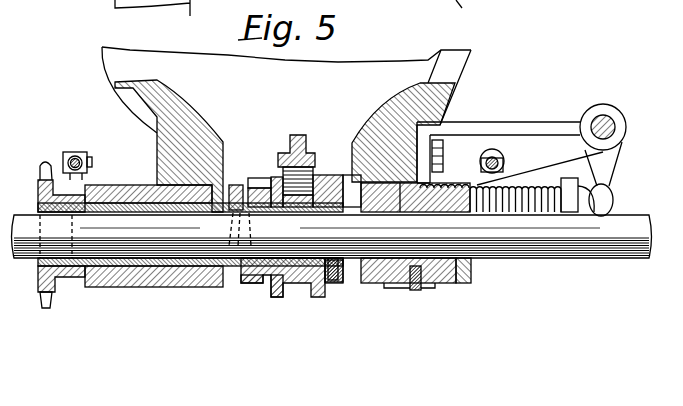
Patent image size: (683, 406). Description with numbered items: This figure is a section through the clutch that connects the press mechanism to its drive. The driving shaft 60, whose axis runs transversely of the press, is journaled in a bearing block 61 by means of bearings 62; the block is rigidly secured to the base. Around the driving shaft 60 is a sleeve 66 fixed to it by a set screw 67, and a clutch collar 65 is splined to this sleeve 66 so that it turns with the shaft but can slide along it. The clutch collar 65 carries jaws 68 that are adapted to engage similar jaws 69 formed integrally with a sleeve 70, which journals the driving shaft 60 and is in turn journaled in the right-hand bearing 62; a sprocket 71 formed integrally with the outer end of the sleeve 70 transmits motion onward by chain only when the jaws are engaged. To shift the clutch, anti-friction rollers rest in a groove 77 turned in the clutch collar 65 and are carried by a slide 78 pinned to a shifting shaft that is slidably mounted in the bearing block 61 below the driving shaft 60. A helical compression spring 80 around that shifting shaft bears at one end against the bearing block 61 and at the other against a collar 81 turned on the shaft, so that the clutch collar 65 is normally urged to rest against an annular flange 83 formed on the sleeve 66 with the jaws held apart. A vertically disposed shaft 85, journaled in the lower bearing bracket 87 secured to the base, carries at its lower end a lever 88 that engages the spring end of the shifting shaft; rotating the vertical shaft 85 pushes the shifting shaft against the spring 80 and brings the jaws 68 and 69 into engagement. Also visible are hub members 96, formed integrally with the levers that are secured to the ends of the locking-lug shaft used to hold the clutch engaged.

The driving shaft 60 is at (618, 232).
The bearing block 61 is at (462, 284).
The bearings 62 is at (196, 287).
The clutch collar 65 is at (263, 178).
The sleeve 66 is at (263, 262).
The set screw 67 is at (332, 284).
The jaws 68 is at (247, 284).
The jaws 69 is at (233, 185).
The sleeve 70 is at (98, 278).
The sprocket 71 is at (40, 177).
The groove 77 is at (283, 291).
The slide 78 is at (305, 153).
The helical compression spring 80 is at (529, 190).
The collar 81 is at (577, 176).
The annular flange 83 is at (334, 190).
The vertically disposed shaft 85 is at (613, 119).
The lower bearing bracket 87 is at (556, 122).
The lever 88 is at (604, 198).
The hub members 96 is at (471, 8).